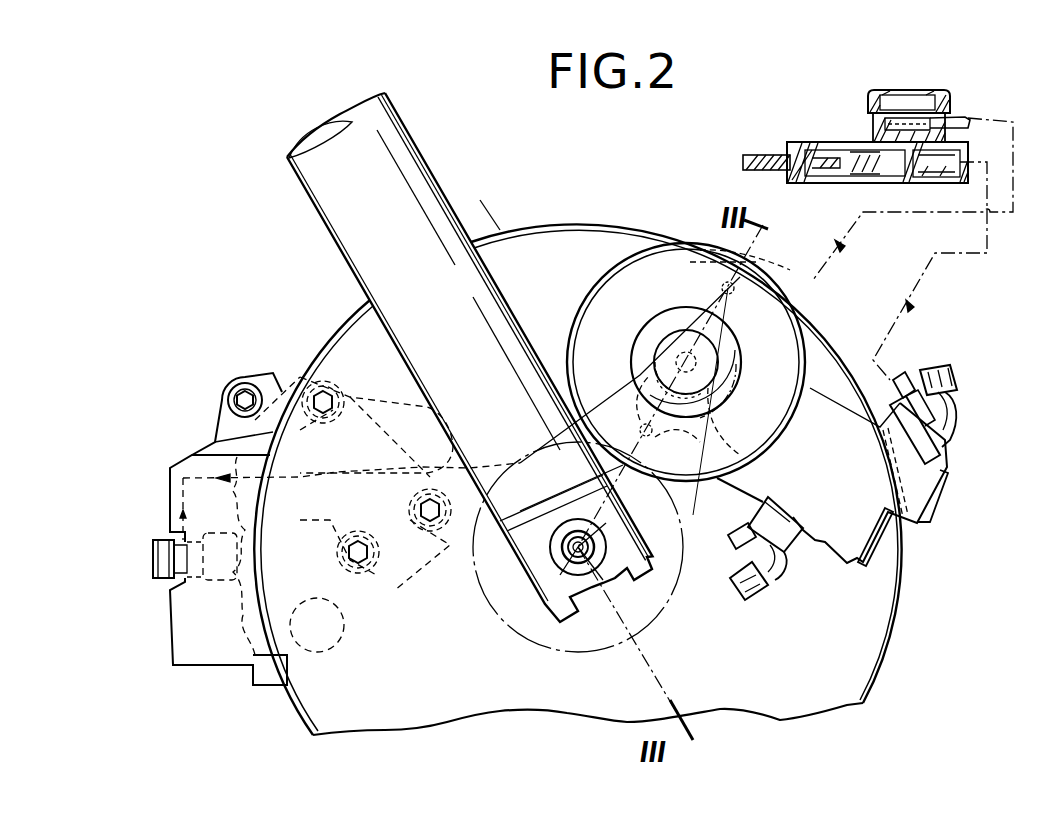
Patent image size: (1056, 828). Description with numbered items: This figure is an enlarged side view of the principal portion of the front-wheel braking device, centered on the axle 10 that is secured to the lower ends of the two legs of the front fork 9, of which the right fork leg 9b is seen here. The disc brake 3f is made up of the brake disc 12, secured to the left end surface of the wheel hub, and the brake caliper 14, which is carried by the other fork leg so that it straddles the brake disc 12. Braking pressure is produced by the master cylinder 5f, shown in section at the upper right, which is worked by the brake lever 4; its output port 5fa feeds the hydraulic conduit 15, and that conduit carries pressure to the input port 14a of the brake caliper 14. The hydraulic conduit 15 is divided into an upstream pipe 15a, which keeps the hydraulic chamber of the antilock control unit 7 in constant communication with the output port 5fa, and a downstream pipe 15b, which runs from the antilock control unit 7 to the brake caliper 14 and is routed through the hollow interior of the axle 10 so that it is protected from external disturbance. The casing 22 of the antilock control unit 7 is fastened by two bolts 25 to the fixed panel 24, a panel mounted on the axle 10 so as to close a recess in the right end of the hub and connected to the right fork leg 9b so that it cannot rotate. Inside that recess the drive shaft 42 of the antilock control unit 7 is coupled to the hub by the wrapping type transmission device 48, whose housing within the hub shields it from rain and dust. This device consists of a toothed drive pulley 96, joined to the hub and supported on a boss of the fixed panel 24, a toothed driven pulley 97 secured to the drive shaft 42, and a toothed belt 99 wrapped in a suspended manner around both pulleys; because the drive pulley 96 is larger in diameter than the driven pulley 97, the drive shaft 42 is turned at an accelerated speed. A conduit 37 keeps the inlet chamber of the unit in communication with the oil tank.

The disc brake 3f is at (242, 372).
The brake lever 4 is at (760, 155).
The master cylinder 5f is at (825, 143).
The output port 5fa is at (978, 112).
The antilock control unit 7 is at (945, 460).
The front fork 9 is at (412, 131).
The right fork leg 9b is at (425, 192).
The axle 10 is at (578, 547).
The brake disc 12 is at (300, 700).
The brake caliper 14 is at (192, 457).
The input port 14a is at (165, 556).
The hydraulic conduit 15 is at (968, 260).
The upstream pipe 15a is at (884, 343).
The downstream pipe 15b is at (462, 455).
The casing 22 is at (612, 284).
The fixed panel 24 is at (868, 663).
The bolts 25 is at (722, 288).
The conduit 37 is at (882, 212).
The drive shaft 42 is at (696, 362).
The wrapping type transmission device 48 is at (604, 395).
The toothed drive pulley 96 is at (660, 512).
The toothed driven pulley 97 is at (648, 390).
The toothed belt 99 is at (700, 452).